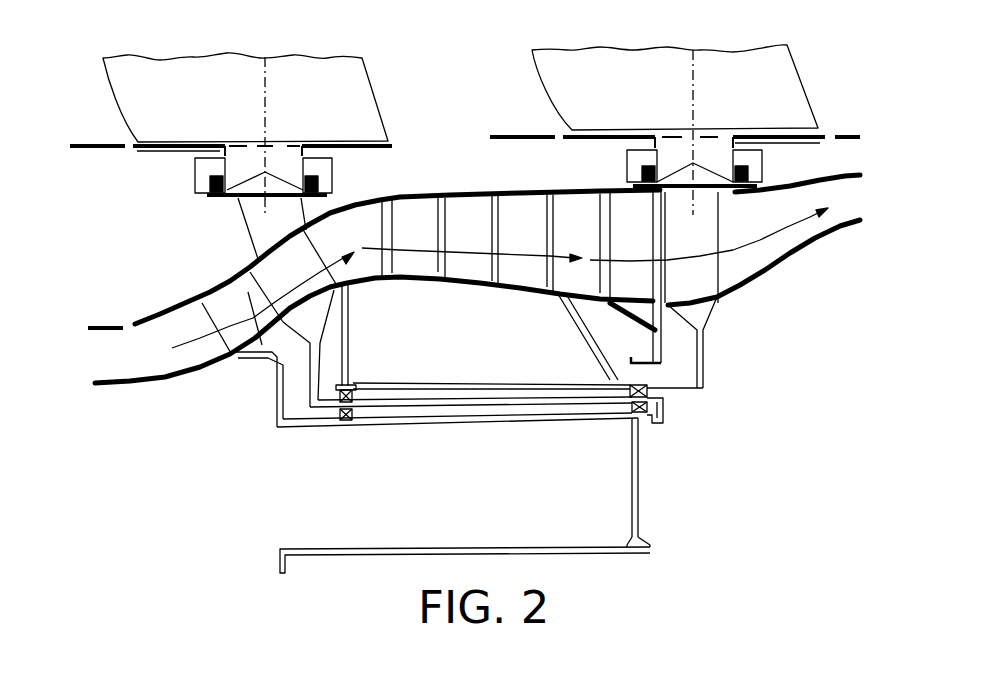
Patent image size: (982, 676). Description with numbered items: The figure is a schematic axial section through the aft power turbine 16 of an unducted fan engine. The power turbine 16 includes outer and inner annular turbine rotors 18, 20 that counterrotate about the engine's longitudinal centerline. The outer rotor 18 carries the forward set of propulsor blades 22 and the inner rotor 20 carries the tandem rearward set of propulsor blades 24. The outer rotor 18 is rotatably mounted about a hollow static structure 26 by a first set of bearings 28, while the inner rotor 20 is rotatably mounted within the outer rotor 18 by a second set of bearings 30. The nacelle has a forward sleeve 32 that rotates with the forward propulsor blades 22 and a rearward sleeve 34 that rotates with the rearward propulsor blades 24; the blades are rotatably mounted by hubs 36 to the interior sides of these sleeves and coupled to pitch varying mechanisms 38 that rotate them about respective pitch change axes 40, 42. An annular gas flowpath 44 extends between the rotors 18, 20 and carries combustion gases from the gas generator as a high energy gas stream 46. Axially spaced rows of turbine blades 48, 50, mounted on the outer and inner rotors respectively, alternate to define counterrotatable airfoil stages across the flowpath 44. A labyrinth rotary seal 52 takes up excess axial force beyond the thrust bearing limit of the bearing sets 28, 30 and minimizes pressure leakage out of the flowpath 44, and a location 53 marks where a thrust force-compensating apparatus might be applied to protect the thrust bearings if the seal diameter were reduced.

The aft power turbine 16 is at (864, 128).
The outer annular turbine rotor 18 is at (475, 190).
The inner annular turbine rotor 20 is at (482, 288).
The forward set of propulsor blades 22 is at (350, 103).
The rearward set of propulsor blades 24 is at (773, 63).
The hollow static structure 26 is at (632, 507).
The first set of bearings 28 is at (344, 423).
The second set of bearings 30 is at (351, 387).
The forward sleeve 32 is at (145, 150).
The rearward sleeve 34 is at (800, 140).
The hubs 36 is at (203, 172).
The pitch varying mechanisms 38 is at (236, 196).
The pitch change axis 40 is at (297, 80).
The pitch change axis 42 is at (725, 68).
The annular gas flowpath 44 is at (166, 327).
The high energy gas stream 46 is at (253, 355).
The turbine blades 48 is at (272, 279).
The turbine blades 50 is at (338, 244).
The labyrinth rotary seal 52 is at (324, 346).
The location 53 is at (653, 425).